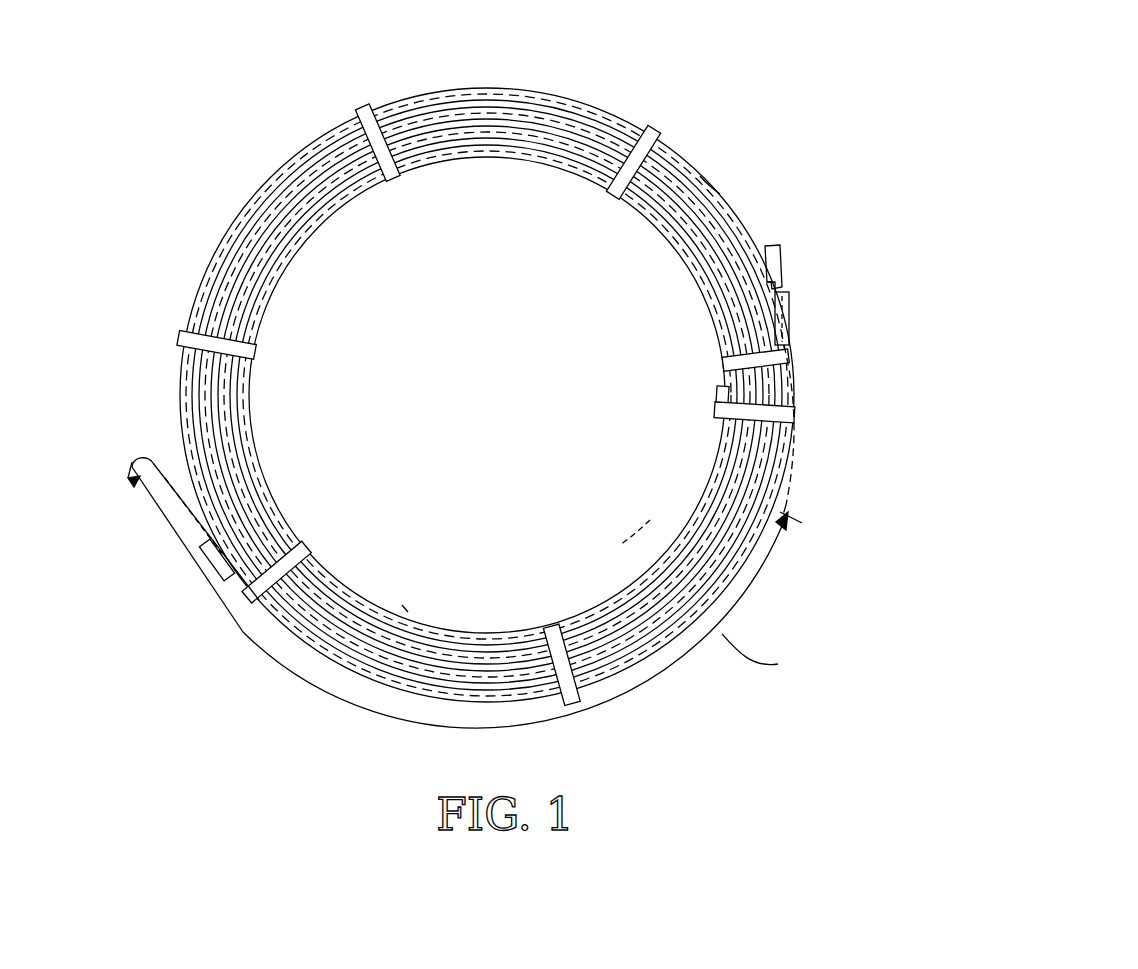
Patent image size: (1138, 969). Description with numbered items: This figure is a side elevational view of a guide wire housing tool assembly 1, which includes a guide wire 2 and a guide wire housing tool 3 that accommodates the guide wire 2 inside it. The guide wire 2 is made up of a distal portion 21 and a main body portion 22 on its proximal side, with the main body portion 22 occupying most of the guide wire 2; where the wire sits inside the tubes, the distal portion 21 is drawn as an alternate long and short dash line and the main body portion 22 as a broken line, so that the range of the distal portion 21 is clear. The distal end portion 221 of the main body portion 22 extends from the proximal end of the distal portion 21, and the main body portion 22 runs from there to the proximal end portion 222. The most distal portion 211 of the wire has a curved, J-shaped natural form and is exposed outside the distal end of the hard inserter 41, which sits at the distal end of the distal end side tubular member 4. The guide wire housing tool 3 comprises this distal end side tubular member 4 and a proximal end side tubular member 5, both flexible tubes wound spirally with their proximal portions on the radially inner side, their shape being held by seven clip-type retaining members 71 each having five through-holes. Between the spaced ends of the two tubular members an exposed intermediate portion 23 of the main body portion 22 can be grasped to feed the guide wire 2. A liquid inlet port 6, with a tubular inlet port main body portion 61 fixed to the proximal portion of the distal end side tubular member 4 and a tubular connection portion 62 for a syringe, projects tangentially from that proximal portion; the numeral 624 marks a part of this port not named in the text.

The guide wire housing tool assembly 1 is at (597, 390).
The guide wire 2 is at (700, 178).
The distal portion 21 is at (335, 682).
The most distal portion 211 is at (135, 463).
The main body portion 22 is at (740, 210).
The distal end portion 221 is at (785, 490).
The proximal end portion 222 is at (666, 531).
The exposed intermediate portion 23 is at (728, 190).
The guide wire housing tool 3 is at (487, 355).
The distal end side tubular member 4 is at (816, 364).
The inserter 41 is at (215, 560).
The proximal end side tubular member 5 is at (258, 176).
The liquid inlet port 6 is at (760, 295).
The inlet port main body portion 61 is at (790, 306).
The connection portion 62 is at (783, 262).
The connector engaging portion 624 is at (766, 288).
The retaining members 71 is at (372, 132).